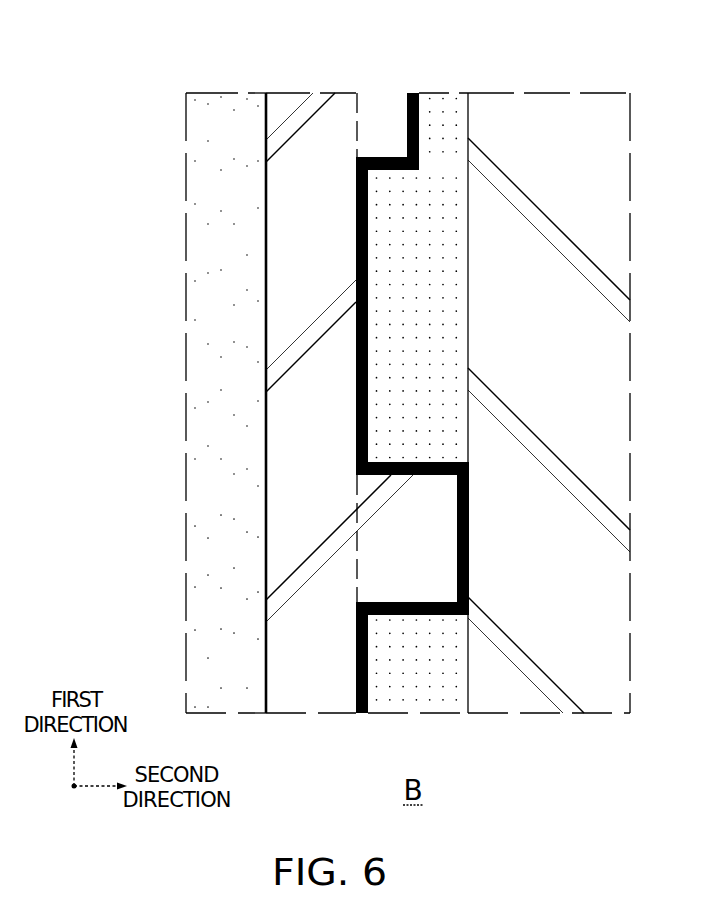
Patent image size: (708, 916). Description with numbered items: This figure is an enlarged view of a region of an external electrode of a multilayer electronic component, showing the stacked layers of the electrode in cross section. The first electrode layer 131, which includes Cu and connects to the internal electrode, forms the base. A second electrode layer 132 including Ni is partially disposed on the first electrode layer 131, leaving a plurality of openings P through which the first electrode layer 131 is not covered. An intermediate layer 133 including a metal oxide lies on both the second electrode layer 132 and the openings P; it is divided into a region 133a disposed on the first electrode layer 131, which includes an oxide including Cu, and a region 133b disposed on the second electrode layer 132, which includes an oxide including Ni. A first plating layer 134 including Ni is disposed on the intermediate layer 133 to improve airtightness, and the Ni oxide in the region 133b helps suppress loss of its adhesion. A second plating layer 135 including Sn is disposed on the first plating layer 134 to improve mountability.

The first electrode layer 131 is at (553, 100).
The second electrode layer 132 is at (445, 100).
The intermediate layer 133 is at (263, 403).
The region of the intermediate layer disposed on the first electrode layer 133a is at (457, 556).
The region of the intermediate layer disposed on the second electrode layer 133b is at (357, 670).
The first plating layer 134 is at (282, 322).
The second plating layer 135 is at (208, 357).
The openings P is at (400, 537).